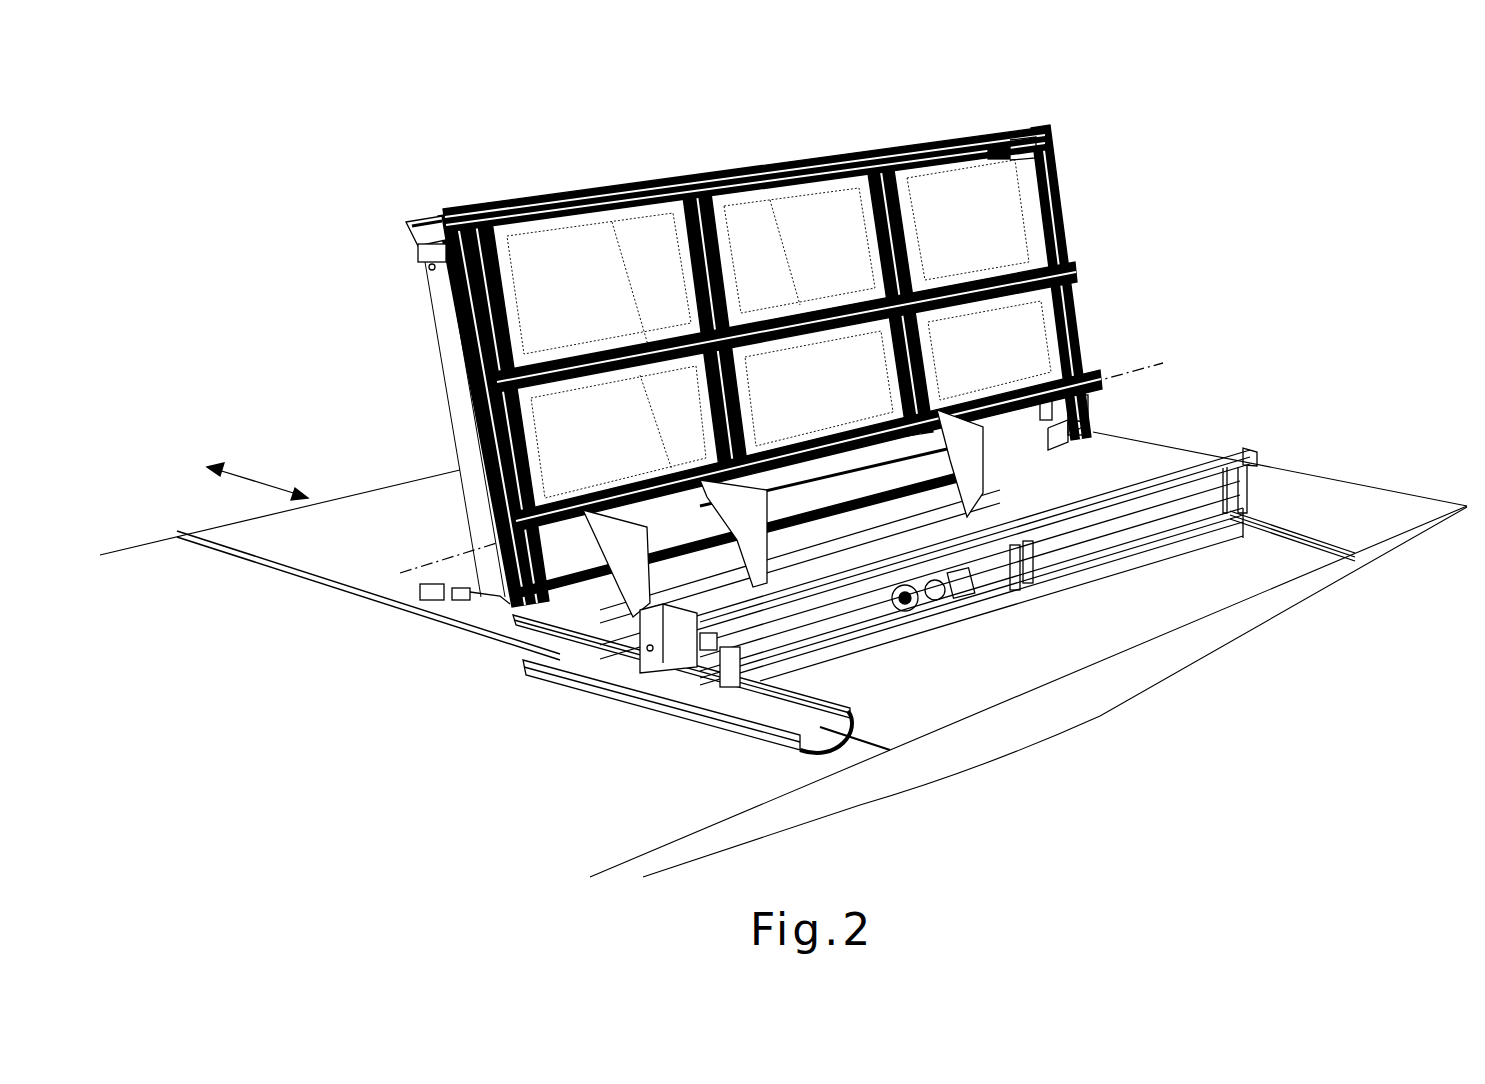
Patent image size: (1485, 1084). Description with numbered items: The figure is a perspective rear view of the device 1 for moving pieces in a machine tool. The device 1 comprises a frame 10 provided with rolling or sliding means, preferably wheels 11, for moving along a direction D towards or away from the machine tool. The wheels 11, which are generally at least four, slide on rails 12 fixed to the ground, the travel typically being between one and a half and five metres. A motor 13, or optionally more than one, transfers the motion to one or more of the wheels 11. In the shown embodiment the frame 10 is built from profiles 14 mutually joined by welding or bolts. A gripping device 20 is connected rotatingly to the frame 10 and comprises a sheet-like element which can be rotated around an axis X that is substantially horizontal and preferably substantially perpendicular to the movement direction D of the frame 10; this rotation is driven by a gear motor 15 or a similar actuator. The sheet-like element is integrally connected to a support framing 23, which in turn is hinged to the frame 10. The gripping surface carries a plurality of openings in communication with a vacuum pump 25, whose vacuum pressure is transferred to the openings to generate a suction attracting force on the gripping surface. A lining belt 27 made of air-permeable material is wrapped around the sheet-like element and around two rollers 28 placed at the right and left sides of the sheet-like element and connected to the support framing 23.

The device for moving pieces 1 is at (228, 212).
The frame 10 is at (887, 570).
The wheels 11 is at (530, 623).
The rails 12 is at (367, 592).
The motor 13 is at (985, 507).
The profiles 14 is at (1222, 455).
The gear motor 15 is at (1090, 421).
The gripping device 20 is at (698, 330).
The support framing 23 is at (795, 165).
The vacuum pump 25 is at (968, 598).
The lining belt 27 is at (548, 262).
The rollers 28 is at (420, 222).